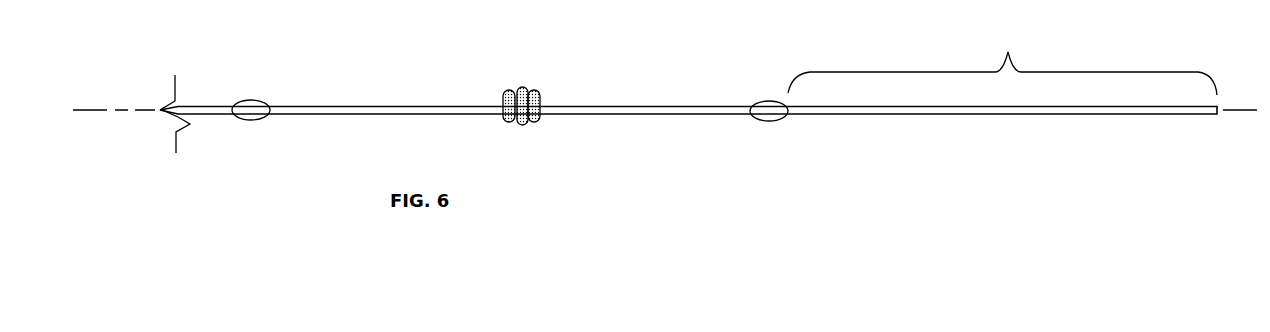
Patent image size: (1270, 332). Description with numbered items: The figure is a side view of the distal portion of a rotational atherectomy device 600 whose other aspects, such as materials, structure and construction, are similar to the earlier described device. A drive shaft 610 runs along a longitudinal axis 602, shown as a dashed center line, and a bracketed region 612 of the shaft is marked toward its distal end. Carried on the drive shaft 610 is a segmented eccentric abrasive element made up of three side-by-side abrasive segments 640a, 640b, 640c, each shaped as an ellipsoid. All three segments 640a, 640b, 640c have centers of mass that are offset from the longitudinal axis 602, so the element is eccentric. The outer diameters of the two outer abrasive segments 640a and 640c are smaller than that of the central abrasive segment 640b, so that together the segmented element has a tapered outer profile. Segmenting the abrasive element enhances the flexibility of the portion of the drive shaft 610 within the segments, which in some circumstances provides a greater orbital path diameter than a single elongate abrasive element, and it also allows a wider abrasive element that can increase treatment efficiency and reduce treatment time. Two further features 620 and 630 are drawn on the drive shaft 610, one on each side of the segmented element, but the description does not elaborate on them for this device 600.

The rotational atherectomy device 600 is at (681, 103).
The longitudinal axis 602 is at (121, 114).
The drive shaft 610 is at (217, 114).
The distal segment 612 is at (1002, 60).
The first bead 620 is at (258, 100).
The second bead 630 is at (766, 101).
The outer abrasive segment 640a is at (506, 90).
The central abrasive segment 640b is at (523, 87).
The outer abrasive segment 640c is at (538, 90).